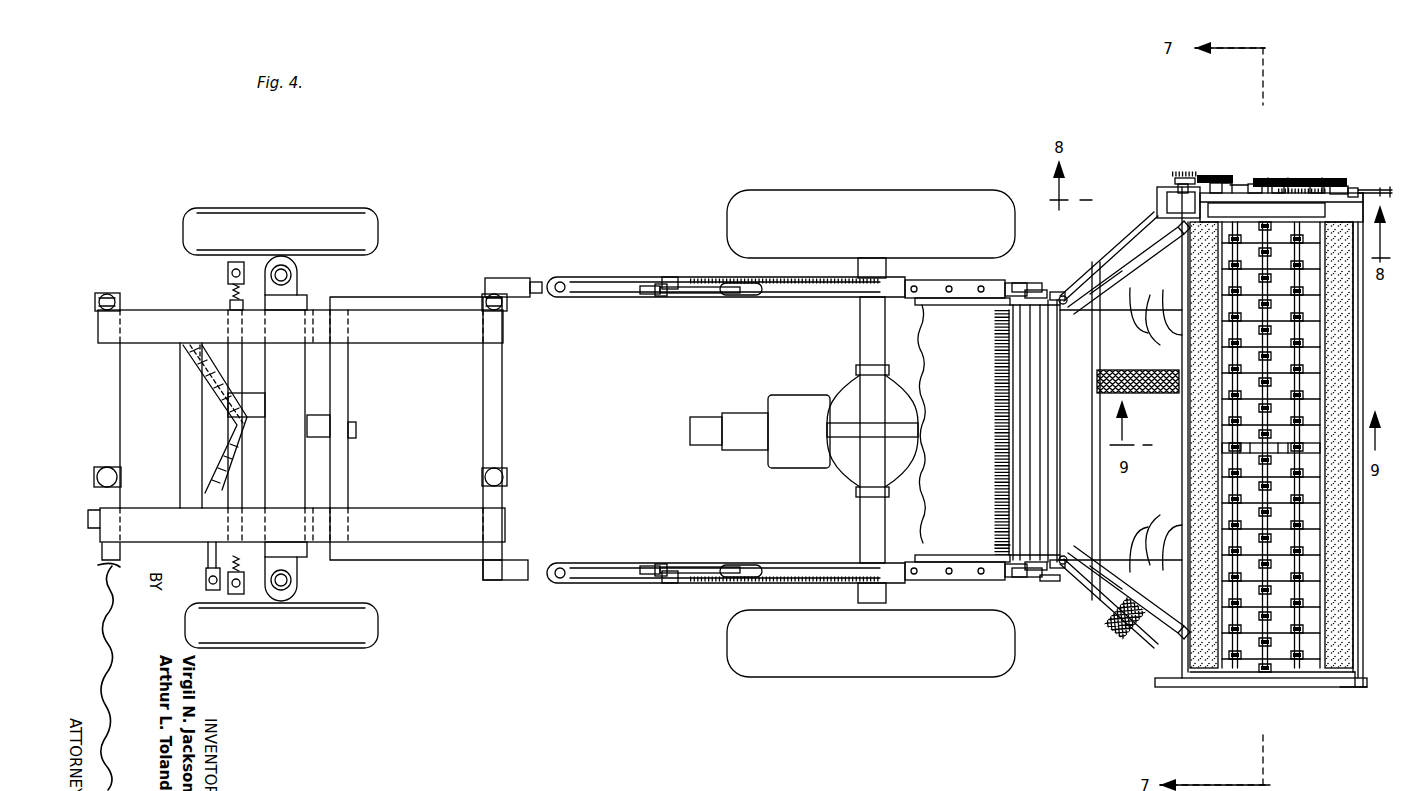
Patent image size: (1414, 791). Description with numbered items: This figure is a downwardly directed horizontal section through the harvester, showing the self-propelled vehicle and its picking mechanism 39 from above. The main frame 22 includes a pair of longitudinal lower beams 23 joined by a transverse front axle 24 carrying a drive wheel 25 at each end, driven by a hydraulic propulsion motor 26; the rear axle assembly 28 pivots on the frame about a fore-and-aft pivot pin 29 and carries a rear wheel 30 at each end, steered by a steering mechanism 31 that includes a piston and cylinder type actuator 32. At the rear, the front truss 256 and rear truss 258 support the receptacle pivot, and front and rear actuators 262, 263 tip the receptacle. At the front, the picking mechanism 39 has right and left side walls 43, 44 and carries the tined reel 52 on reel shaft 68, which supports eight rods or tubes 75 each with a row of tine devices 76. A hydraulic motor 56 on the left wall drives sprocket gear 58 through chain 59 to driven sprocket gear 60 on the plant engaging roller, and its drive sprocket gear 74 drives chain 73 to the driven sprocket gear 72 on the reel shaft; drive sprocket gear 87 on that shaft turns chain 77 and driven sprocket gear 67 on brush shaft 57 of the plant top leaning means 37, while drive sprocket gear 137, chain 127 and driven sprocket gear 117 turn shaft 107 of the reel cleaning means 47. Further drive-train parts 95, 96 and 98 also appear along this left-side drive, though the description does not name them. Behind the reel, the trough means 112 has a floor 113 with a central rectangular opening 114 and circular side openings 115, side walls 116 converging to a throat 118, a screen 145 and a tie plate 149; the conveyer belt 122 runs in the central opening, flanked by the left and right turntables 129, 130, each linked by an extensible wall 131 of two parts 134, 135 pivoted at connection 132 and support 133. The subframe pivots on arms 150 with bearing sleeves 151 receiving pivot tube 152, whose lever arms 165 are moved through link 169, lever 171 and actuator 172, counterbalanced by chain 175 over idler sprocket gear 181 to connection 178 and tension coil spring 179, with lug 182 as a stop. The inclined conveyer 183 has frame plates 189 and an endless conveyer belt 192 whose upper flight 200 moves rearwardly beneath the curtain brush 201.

The main frame 22 is at (486, 583).
The longitudinal lower beam 23 is at (501, 278).
The front axle 24 is at (860, 330).
The drive wheel 25 is at (806, 190).
The hydraulic propulsion motor 26 is at (730, 418).
The rear axle assembly 28 is at (308, 475).
The pivot pin 29 is at (357, 430).
The rear wheel 30 is at (330, 210).
The steering mechanism 31 is at (246, 367).
The piston and cylinder type actuator 32 is at (226, 482).
The plant top leaning means 37 is at (1340, 346).
The picking mechanism 39 is at (1316, 688).
The right front side wall 43 is at (1282, 687).
The left front side wall 44 is at (1259, 178).
The reel cleaning means 47 is at (1196, 663).
The tined reel 52 is at (1322, 603).
The hydraulic motor 56 is at (1172, 203).
The brush shaft 57 is at (1335, 186).
The sprocket gear 58 is at (1175, 181).
The chain 59 is at (1203, 178).
The driven sprocket gear 60 is at (1251, 178).
The driven sprocket gear 67 is at (1356, 188).
The reel shaft 68 is at (1278, 178).
The driven sprocket gear 72 is at (1284, 189).
The endless sprocket chain 73 is at (1223, 175).
The drive sprocket gear 74 is at (1172, 174).
The rod or tube 75 is at (1312, 520).
The tine device 76 is at (1325, 405).
The sprocket chain 77 is at (1322, 178).
The drive sprocket gear 87 is at (1268, 178).
The roller shaft 95 is at (1262, 232).
The sprocket 96 is at (1318, 178).
The drive shaft 98 is at (1380, 190).
The cleaning brush shaft 107 is at (1212, 175).
The trough means 112 is at (1120, 628).
The floor 113 is at (1112, 300).
The central rectangular opening 114 is at (1095, 312).
The circular side opening 115 is at (1150, 297).
The upstanding side wall 116 is at (1083, 282).
The driven sprocket gear 117 is at (1199, 174).
The throat 118 is at (1010, 534).
The endless conveyer belt 122 is at (1030, 408).
The sprocket chain 127 is at (1233, 175).
The left turntable 129 is at (1160, 305).
The right turntable 130 is at (1170, 568).
The extensible and contractible wall 131 is at (1116, 272).
The pivotal connection 132 is at (1172, 231).
The pivotal support 133 is at (1060, 318).
The wall part 134 is at (1137, 241).
The wall part 135 is at (1104, 312).
The drive sprocket gear 137 is at (1292, 178).
The screen 145 is at (1097, 383).
The top transverse tie plate 149 is at (1058, 430).
The forwardly projecting arm 150 is at (1030, 283).
The cylindrical bearing sleeve 151 is at (1040, 290).
The pivot tube 152 is at (1050, 582).
The lever arm 165 is at (1060, 300).
The link 169 is at (688, 296).
The lever 171 is at (655, 296).
The piston and cylinder hydraulic type actuator 172 is at (750, 296).
The sprocket chain 175 is at (598, 276).
The chain-to-spring connection 178 is at (668, 276).
The tension coil spring 179 is at (710, 278).
The idler sprocket gear 181 is at (572, 278).
The lug 182 is at (667, 298).
The conveyer 183 is at (920, 371).
The frame plate 189 is at (941, 305).
The endless conveyer belt 192 is at (932, 483).
The upper flight 200 is at (938, 392).
The brush 201 is at (998, 440).
The front truss 256 is at (490, 297).
The rear truss 258 is at (107, 294).
The front actuator 262 is at (488, 468).
The rear actuator 263 is at (120, 468).